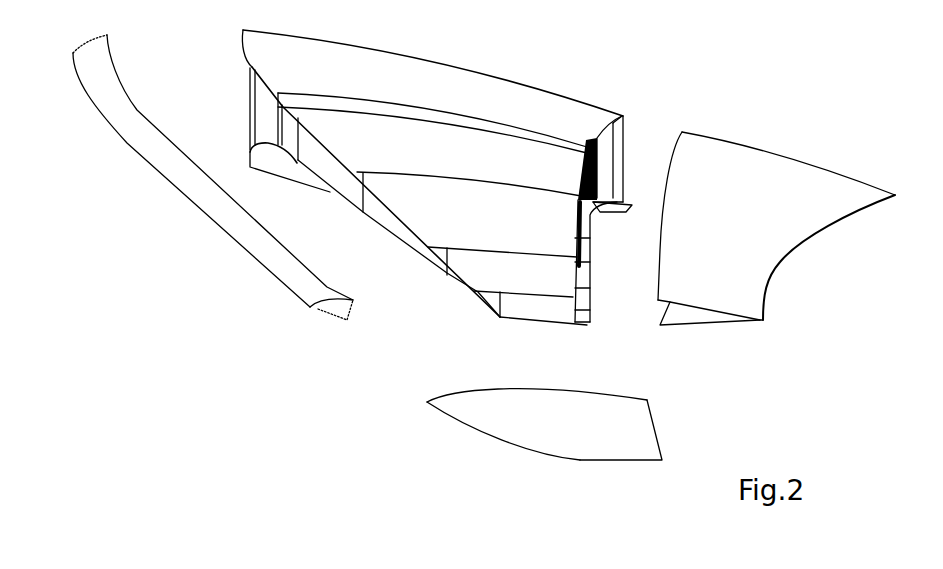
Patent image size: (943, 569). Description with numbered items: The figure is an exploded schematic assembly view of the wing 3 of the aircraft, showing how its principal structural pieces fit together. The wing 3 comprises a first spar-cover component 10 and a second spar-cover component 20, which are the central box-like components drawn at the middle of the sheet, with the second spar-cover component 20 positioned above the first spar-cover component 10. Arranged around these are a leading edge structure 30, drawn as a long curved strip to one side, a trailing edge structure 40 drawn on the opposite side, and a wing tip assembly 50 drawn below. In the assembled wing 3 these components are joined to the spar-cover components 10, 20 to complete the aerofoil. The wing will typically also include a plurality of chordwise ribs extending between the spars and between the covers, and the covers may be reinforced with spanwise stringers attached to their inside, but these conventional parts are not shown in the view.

The first spar-cover component 10 is at (543, 317).
The second spar-cover component 20 is at (503, 100).
The leading edge structure 30 is at (223, 210).
The trailing edge structure 40 is at (752, 253).
The wing tip assembly 50 is at (560, 440).
The wing 3 is at (305, 383).